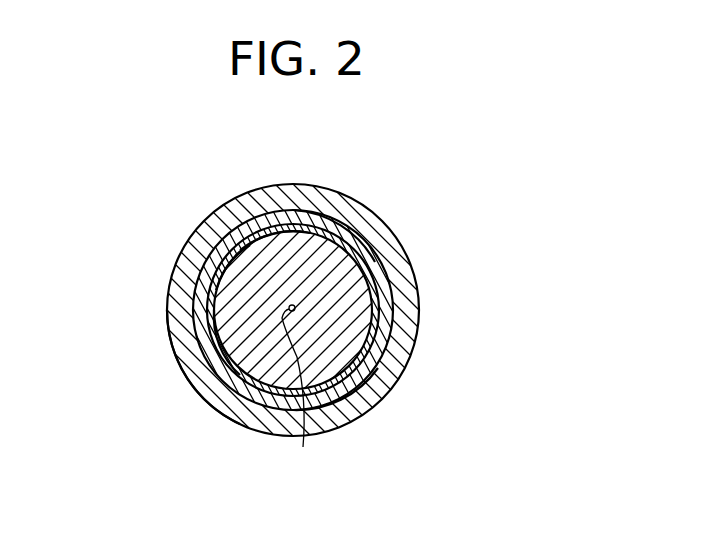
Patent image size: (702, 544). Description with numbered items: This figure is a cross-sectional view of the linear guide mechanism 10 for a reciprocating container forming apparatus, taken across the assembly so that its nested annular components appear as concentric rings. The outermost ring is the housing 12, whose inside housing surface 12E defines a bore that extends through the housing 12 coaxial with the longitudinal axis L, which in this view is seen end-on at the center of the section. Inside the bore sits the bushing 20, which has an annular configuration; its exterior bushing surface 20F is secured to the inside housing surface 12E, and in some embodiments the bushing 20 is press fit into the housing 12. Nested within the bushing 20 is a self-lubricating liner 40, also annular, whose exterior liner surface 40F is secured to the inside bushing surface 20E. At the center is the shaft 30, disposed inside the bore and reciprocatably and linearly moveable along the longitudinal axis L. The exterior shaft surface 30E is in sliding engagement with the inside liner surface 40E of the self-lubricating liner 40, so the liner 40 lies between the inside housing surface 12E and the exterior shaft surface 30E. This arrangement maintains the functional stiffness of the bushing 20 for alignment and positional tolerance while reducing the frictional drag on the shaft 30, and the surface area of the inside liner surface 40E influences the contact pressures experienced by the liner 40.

The linear guide mechanism 10 is at (140, 148).
The housing 12 is at (410, 315).
The inside housing surface 12E is at (240, 424).
The bushing 20 is at (347, 234).
The inside bushing surface 20E is at (375, 262).
The exterior bushing surface 20F is at (378, 368).
The shaft 30 is at (262, 270).
The exterior shaft surface 30E is at (216, 290).
The self-lubricating liner 40 is at (282, 232).
The inside liner surface 40E is at (310, 233).
The exterior liner surface 40F is at (240, 375).
The longitudinal axis L is at (295, 390).